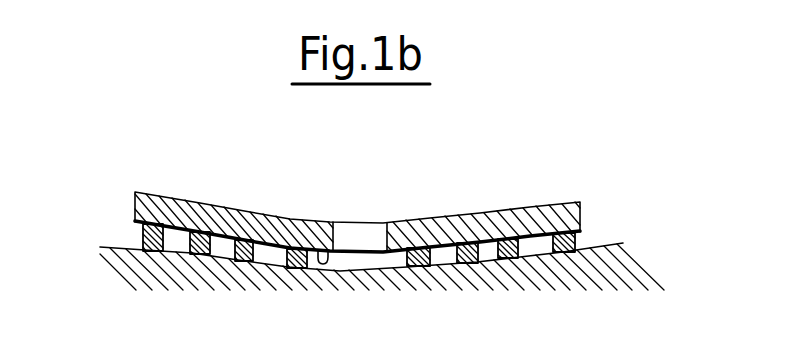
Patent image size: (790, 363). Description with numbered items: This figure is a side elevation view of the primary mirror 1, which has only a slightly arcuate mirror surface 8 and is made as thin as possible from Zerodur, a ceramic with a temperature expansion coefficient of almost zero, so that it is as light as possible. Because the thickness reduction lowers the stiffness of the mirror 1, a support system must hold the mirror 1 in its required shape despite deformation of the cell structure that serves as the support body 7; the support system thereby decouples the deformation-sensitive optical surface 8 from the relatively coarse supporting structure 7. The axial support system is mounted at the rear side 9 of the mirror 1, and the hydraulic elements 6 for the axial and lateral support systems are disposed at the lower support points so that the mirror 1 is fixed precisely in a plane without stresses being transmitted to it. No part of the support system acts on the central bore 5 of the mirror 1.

The mirror 1 is at (580, 207).
The central bore 5 is at (358, 238).
The hydraulic elements 6 is at (514, 240).
The support body 7 is at (112, 247).
The mirror surface 8 is at (196, 190).
The rear side 9 is at (318, 250).